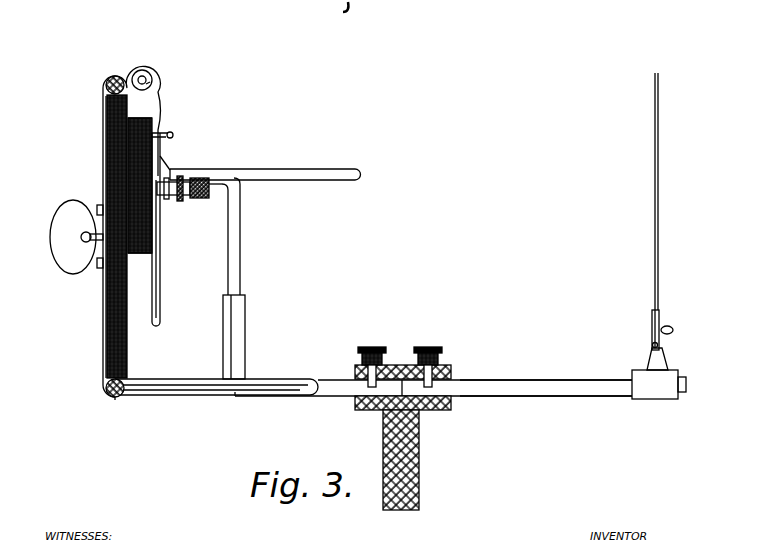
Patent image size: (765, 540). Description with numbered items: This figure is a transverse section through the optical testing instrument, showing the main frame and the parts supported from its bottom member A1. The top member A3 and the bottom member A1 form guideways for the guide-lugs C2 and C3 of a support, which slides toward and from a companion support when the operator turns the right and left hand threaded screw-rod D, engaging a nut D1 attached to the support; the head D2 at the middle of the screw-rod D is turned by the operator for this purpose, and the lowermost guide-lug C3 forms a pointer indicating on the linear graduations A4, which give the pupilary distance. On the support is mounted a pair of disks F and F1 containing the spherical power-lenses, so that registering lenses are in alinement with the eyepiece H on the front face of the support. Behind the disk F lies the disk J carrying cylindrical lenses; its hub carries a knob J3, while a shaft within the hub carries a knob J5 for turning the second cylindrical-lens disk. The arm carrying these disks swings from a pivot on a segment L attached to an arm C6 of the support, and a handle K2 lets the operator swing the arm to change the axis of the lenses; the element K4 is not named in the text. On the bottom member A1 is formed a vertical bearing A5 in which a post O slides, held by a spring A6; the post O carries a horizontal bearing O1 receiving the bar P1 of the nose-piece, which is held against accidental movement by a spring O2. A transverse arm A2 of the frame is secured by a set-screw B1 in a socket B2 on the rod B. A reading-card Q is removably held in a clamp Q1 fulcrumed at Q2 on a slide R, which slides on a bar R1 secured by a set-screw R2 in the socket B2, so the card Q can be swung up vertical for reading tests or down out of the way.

The guide-lug C2 is at (115, 75).
The top member A3 is at (108, 77).
The head D2 is at (143, 64).
The nut D1 is at (147, 76).
The screw-rod D is at (152, 80).
The disk F is at (125, 353).
The disk F1 is at (112, 352).
The disk J is at (157, 122).
The segment L is at (162, 318).
The handle K2 is at (174, 134).
The stop K4 is at (174, 163).
The arm C6 is at (162, 282).
The knob J3 is at (175, 200).
The knob J5 is at (196, 200).
The bar P1 is at (280, 169).
The bearing O1 is at (197, 175).
The spring O2 is at (224, 169).
The post O is at (242, 240).
The bearing A5 is at (247, 311).
The spring A6 is at (226, 345).
The guide-lug C3 is at (121, 397).
The linear graduations A4 is at (112, 397).
The eyepiece H is at (52, 237).
The bottom member A1 is at (295, 378).
The arm A2 is at (336, 378).
The socket B2 is at (448, 398).
The rod B is at (420, 480).
The set-screw B1 is at (375, 346).
The set-screw R2 is at (440, 346).
The bar R1 is at (580, 398).
The slide R is at (655, 400).
The fulcrum Q2 is at (668, 346).
The clamp Q1 is at (661, 316).
The reading-card Q is at (653, 180).